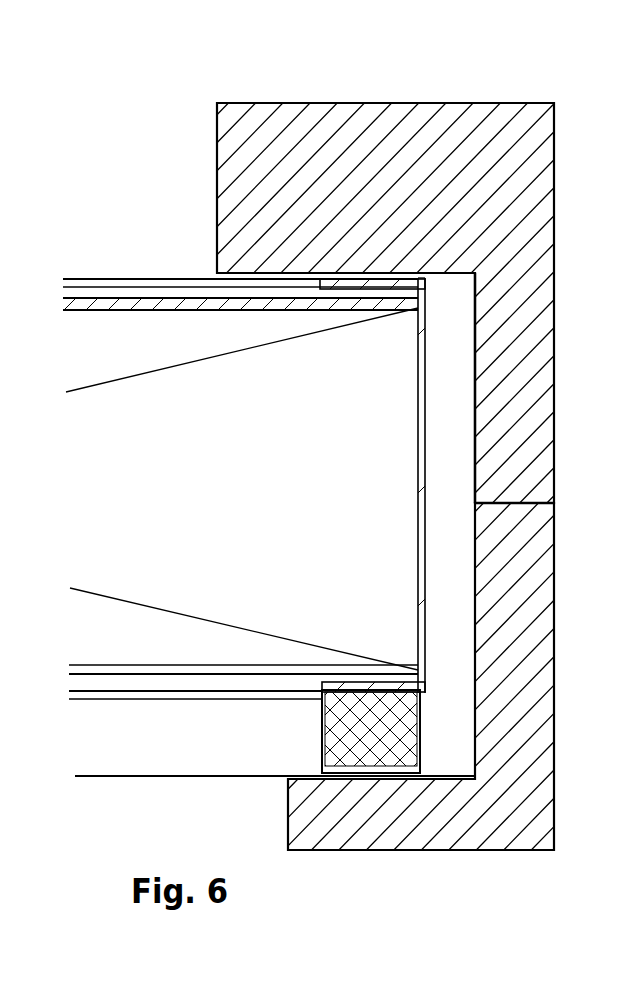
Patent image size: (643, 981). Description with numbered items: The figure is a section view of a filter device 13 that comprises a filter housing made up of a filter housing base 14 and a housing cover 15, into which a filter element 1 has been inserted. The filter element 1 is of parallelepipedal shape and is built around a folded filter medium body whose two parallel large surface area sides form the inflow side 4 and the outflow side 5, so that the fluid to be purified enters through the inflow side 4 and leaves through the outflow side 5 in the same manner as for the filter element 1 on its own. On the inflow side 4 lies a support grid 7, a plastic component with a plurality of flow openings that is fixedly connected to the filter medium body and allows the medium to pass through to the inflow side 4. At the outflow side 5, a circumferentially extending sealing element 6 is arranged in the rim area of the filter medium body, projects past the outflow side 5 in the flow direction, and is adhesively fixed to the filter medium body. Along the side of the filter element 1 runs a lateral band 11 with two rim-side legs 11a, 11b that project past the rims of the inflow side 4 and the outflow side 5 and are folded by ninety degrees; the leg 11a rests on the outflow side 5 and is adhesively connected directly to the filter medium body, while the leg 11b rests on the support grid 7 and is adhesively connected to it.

The filter element 1 is at (107, 184).
The inflow side 4 is at (155, 262).
The outflow side 5 is at (156, 712).
The sealing element 6 is at (322, 740).
The support grid 7 is at (142, 309).
The lateral band 11 is at (417, 545).
The leg 11a is at (361, 680).
The leg 11b is at (360, 300).
The filter device 13 is at (457, 80).
The filter housing base 14 is at (543, 686).
The housing cover 15 is at (540, 303).